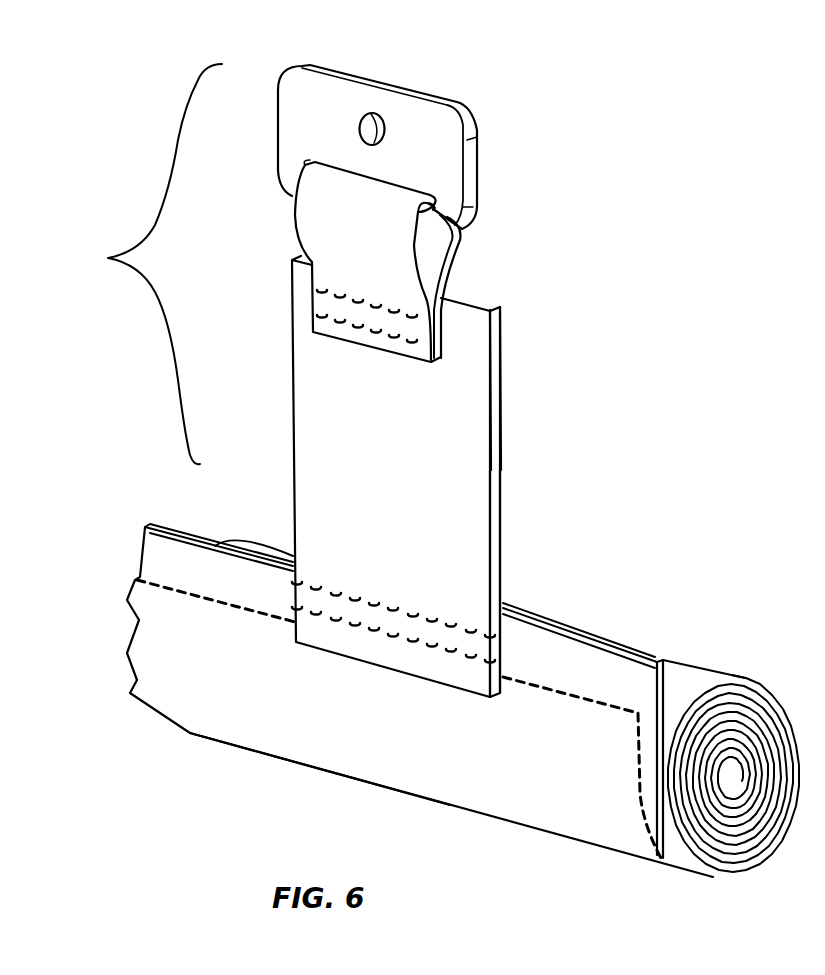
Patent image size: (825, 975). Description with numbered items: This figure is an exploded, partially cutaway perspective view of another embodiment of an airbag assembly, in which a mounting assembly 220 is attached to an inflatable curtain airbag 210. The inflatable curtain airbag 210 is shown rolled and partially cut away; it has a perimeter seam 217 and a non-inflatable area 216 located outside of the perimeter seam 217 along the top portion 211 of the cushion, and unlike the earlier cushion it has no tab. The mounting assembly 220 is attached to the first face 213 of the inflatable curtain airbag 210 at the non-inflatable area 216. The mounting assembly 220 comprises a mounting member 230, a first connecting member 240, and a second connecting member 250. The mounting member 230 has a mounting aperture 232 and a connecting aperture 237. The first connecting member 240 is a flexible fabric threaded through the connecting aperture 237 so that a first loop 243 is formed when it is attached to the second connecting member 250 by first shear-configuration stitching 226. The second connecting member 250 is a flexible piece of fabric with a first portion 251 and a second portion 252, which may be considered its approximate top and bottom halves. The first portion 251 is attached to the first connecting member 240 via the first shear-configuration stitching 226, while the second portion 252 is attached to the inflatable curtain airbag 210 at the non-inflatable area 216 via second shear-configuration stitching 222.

The inflatable curtain airbag 210 is at (582, 668).
The top portion 211 is at (640, 688).
The first face 213 is at (423, 731).
The non-inflatable area 216 is at (610, 677).
The perimeter seam 217 is at (240, 608).
The mounting assembly 220 is at (141, 264).
The second shear-configuration stitching 222 is at (347, 623).
The first shear-configuration stitching 226 is at (376, 332).
The mounting member 230 is at (437, 148).
The mounting aperture 232 is at (368, 132).
The connecting aperture 237 is at (448, 208).
The first connecting member 240 is at (472, 253).
The first loop 243 is at (432, 260).
The second connecting member 250 is at (465, 476).
The first portion 251 is at (462, 368).
The second portion 252 is at (467, 583).